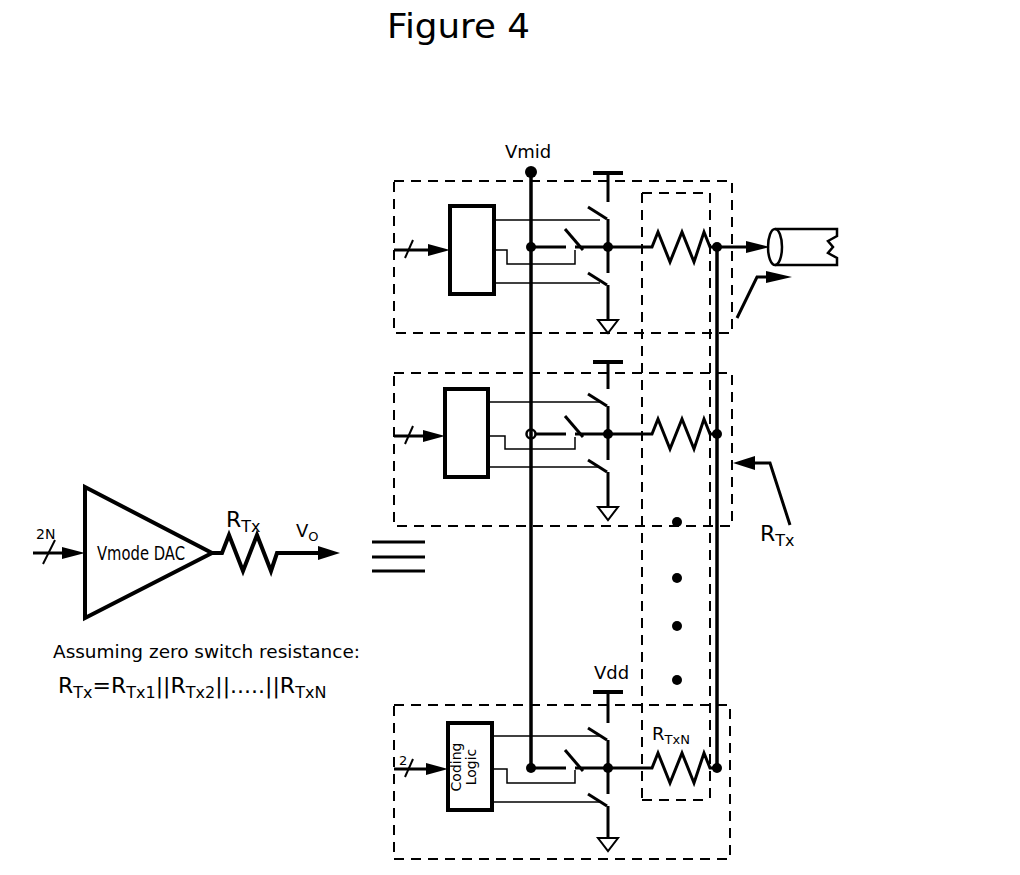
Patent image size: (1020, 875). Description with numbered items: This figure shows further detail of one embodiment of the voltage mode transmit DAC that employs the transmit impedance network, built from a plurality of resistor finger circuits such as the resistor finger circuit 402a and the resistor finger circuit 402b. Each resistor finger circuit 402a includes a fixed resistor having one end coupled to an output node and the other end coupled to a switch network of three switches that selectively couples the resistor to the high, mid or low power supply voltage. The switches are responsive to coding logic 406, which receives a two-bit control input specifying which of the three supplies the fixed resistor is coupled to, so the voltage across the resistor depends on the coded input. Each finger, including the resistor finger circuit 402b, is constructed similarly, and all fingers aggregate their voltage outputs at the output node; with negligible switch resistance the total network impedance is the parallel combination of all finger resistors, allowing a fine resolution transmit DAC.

The resistor finger circuit 402a is at (392, 202).
The resistor finger circuit 402b is at (392, 392).
The coding logic 406 is at (472, 296).